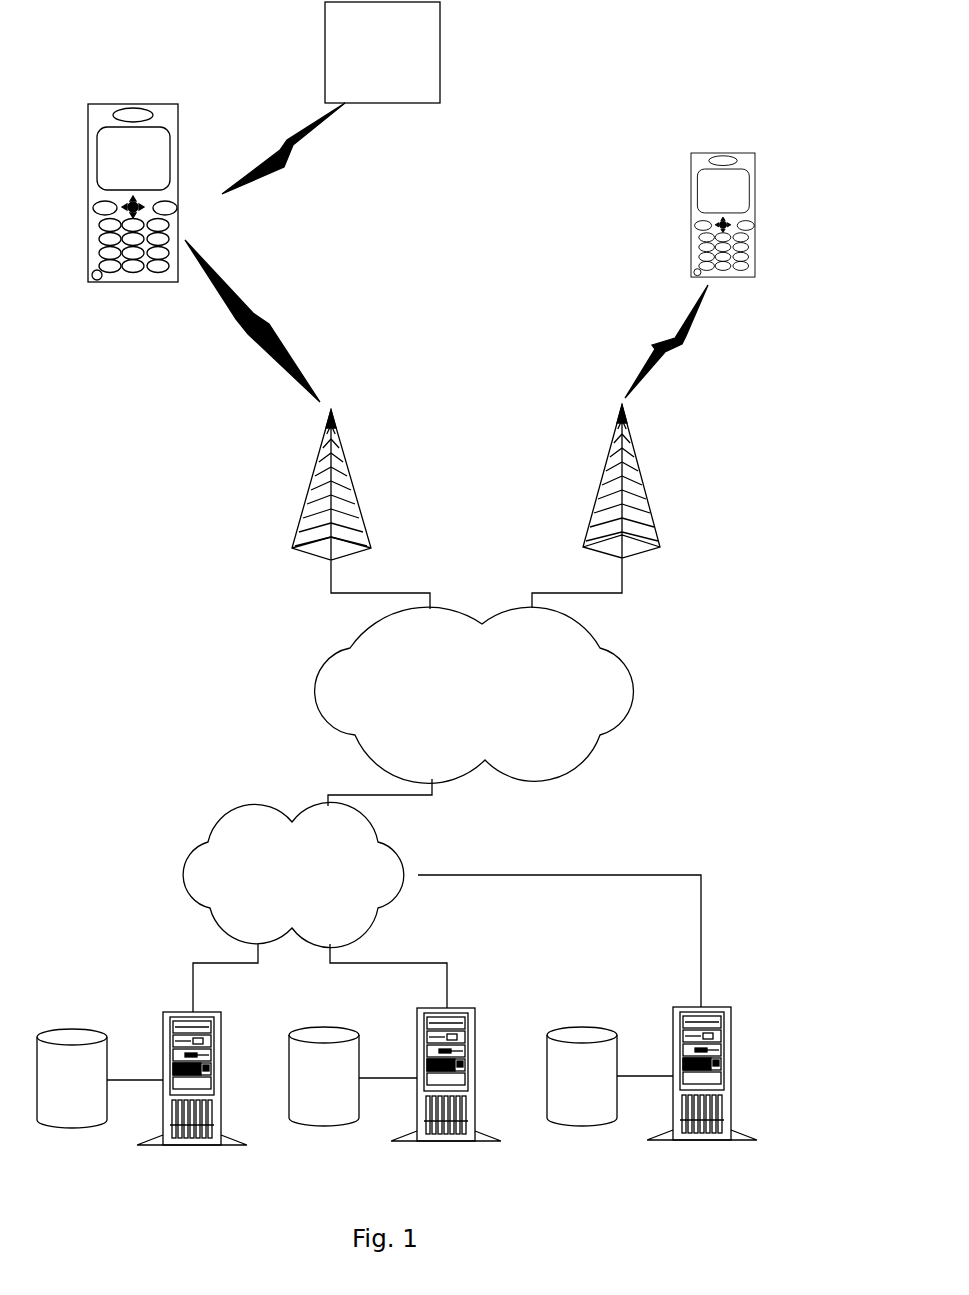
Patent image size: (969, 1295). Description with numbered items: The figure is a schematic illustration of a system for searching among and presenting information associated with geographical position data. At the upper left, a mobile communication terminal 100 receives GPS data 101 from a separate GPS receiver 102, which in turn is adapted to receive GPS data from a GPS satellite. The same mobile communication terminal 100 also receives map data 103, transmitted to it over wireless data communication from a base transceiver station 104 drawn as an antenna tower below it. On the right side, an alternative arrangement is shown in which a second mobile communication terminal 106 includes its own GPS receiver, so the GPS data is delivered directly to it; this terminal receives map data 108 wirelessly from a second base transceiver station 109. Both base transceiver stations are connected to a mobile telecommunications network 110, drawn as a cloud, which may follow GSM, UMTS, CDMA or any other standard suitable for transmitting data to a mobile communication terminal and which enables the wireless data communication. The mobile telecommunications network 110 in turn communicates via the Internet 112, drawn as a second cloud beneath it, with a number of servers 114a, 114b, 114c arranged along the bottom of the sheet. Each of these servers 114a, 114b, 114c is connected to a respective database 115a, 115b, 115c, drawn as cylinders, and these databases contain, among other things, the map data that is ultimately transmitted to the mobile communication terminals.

The mobile communication terminal 100 is at (84, 207).
The GPS data 101 is at (292, 144).
The GPS receiver 102 is at (382, 52).
The map data 103 is at (257, 307).
The base transceiver station 104 is at (334, 490).
The mobile communication terminal 106 is at (718, 153).
The map data 108 is at (648, 338).
The base transceiver station 109 is at (612, 460).
The mobile telecommunications network 110 is at (474, 706).
The Internet 112 is at (442, 907).
The server 114a is at (64, 1036).
The database 115a is at (163, 1050).
The server 114b is at (316, 1034).
The database 115b is at (417, 1050).
The server 114c is at (575, 1034).
The database 115c is at (673, 1050).